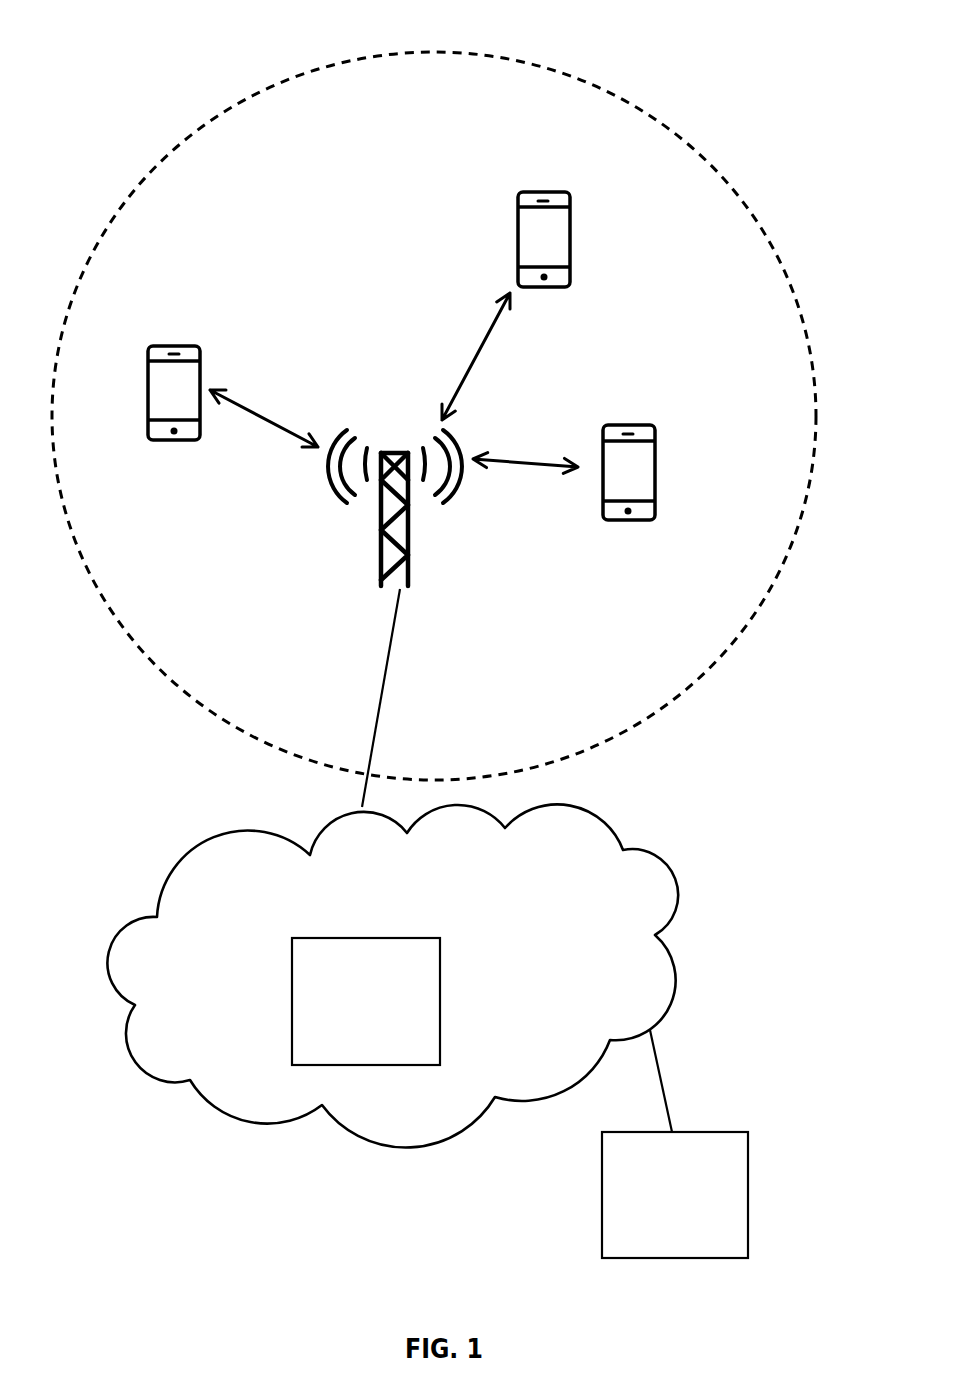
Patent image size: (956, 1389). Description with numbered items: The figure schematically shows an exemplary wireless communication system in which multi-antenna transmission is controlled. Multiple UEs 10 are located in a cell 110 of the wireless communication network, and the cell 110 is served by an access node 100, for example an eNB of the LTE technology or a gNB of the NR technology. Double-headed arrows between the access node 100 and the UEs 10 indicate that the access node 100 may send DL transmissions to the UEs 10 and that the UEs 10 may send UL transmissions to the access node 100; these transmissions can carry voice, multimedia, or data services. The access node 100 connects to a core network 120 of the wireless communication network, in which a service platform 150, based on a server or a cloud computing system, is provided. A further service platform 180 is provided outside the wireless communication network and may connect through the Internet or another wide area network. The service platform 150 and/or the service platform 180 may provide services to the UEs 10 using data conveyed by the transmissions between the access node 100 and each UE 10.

The UE 10 is at (545, 186).
The access node 100 is at (379, 557).
The cell 110 is at (556, 72).
The core network 120 is at (692, 979).
The service platform 150 is at (292, 998).
The service platform 180 is at (750, 1198).